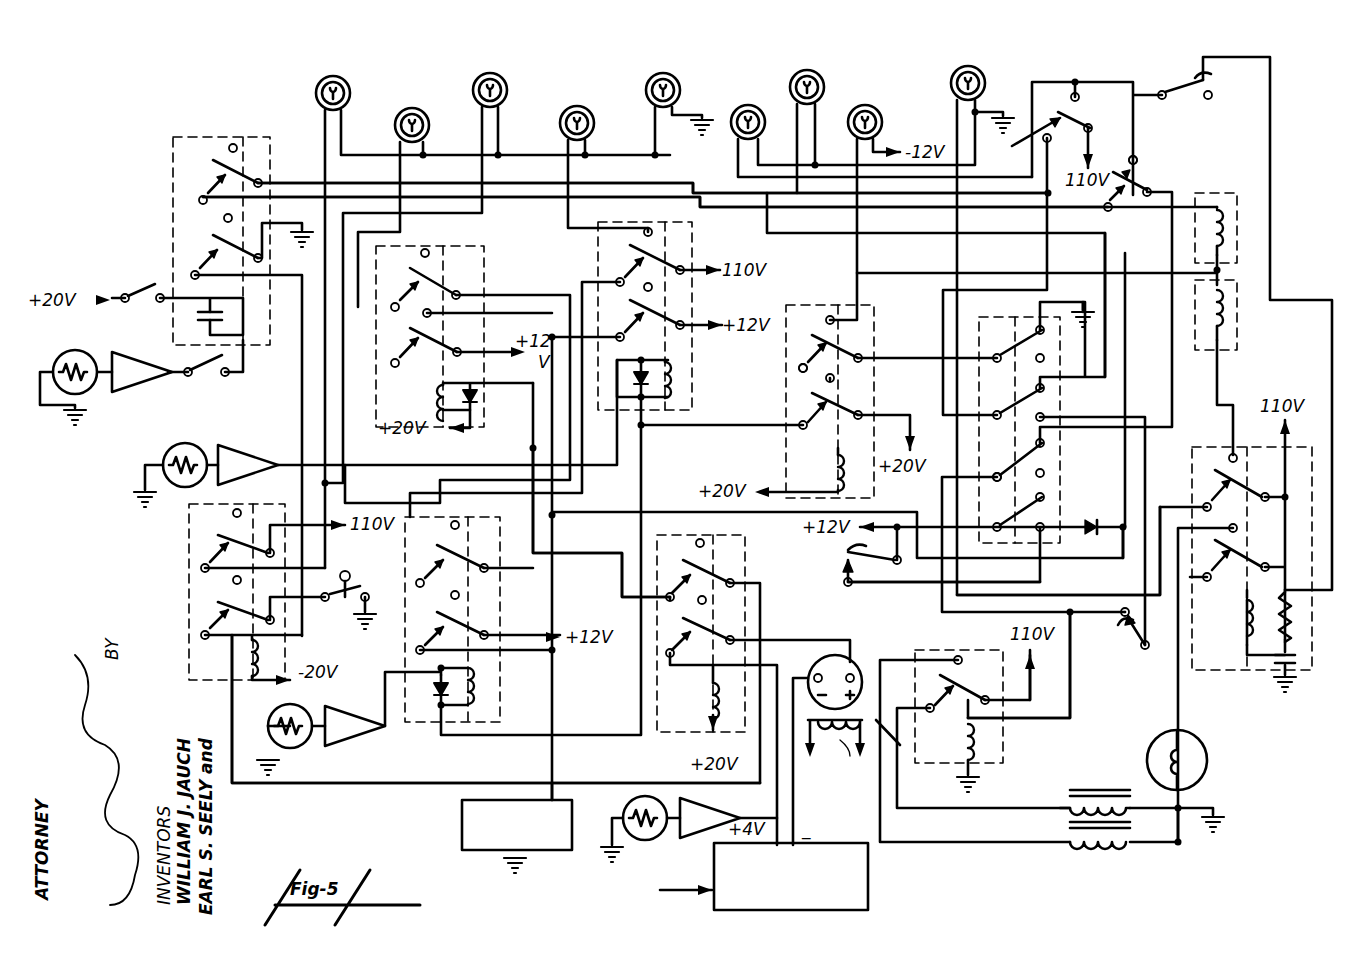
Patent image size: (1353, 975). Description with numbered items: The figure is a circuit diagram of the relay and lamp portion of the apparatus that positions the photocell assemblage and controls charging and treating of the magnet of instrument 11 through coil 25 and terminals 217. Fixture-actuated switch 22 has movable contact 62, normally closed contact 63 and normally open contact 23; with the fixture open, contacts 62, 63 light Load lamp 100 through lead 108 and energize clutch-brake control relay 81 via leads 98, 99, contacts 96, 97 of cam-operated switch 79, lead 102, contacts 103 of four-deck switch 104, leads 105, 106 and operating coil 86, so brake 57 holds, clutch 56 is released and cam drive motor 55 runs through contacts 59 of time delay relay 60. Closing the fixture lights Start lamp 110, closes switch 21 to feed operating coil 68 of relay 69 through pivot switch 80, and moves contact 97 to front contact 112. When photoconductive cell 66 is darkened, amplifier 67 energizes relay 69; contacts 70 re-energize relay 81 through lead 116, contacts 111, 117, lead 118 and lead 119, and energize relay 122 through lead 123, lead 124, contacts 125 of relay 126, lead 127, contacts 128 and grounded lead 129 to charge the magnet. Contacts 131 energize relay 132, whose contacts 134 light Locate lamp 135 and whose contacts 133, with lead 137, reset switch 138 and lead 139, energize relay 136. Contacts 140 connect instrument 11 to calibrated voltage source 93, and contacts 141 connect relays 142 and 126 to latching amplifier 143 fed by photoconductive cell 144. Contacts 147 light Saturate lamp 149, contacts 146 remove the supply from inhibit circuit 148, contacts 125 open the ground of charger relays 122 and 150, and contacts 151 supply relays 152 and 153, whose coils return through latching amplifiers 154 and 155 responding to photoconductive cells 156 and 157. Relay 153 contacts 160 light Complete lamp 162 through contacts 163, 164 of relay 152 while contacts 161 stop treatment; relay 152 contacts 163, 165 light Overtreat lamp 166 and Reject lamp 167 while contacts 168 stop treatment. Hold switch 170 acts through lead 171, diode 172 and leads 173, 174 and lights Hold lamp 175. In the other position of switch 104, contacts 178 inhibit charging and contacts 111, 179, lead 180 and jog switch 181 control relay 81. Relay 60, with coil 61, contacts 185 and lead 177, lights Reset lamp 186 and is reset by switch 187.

The lamp 135 is at (316, 93).
The saturate lamp 149 is at (395, 122).
The lamp 162 is at (473, 88).
The lamp 166 is at (560, 126).
The lamp 167 is at (650, 100).
The Load lamp 100 is at (731, 120).
The Start lamp 110 is at (790, 85).
The lamp 175 is at (882, 122).
The RESET lamp 186 is at (951, 80).
The relay 69 is at (205, 137).
The contacts of relay 69 70 is at (200, 172).
The contacts of relay 69 131 is at (200, 228).
The fixture-actuated switch 21 is at (160, 285).
The operating coil 68 is at (248, 328).
The cam-actuated pivot switch 80 is at (210, 372).
The photoconductive cell 66 is at (85, 352).
The amplifier 67 is at (155, 358).
The photoconductive cell 156 is at (178, 445).
The latching amplifier 154 is at (255, 452).
The relay 142 is at (488, 262).
The contacts of relay 142 147 is at (438, 262).
The contacts of relay 142 146 is at (412, 357).
The relay 152 is at (745, 365).
The contacts of relay 152 164 is at (655, 236).
The contacts of relay 152 163 is at (665, 258).
The contacts of relay 152 165 is at (615, 272).
The contacts of relay 152 168 is at (665, 312).
The relay 126 is at (780, 300).
The lead 127 is at (912, 358).
The contacts of relay 126 125 is at (800, 355).
The contacts of relay 126 151 is at (805, 396).
The lead 102 is at (1165, 345).
The contacts of four-deck switch 104 128 is at (1035, 320).
The lead 129 is at (1088, 310).
The contact of four-deck switch 104 117 is at (1048, 385).
The contact of four-deck switch 104 111 is at (1030, 403).
The contact of four-deck switch 104 179 is at (1048, 400).
The lead 180 is at (1108, 415).
The contacts of four-deck switch 104 103 is at (1048, 444).
The four-deck switch 104 is at (1118, 473).
The lead 105 is at (942, 492).
The contacts of four-deck switch 104 178 is at (1050, 505).
The lead 124 is at (1143, 268).
The lead 116 is at (1050, 222).
The diode 172 is at (1088, 540).
The lead 173 is at (1125, 562).
The hold switch 170 is at (845, 560).
The lead 171 is at (920, 582).
The relay 122 is at (1217, 190).
The relay 150 is at (1298, 340).
The lead 98 is at (1093, 82).
The lead 108 is at (1030, 78).
The fixture-actuated switch 22 is at (1047, 101).
The contact of fixture switch 22 63 is at (1075, 112).
The contact of fixture switch 22 23 is at (1030, 136).
The movable contact of fixture switch 22 62 is at (1082, 130).
The lead 99 is at (1104, 143).
The back contact of cam-operated switch 79 96 is at (1109, 152).
The switch 187 is at (1185, 82).
The cam-operated switch 79 is at (1140, 160).
The movable contact of cam-operated switch 79 97 is at (1147, 188).
The front contact of cam-operated switch 79 112 is at (1115, 198).
The lead 123 is at (1160, 215).
The lead 118 is at (310, 180).
The lead 119 is at (388, 198).
The time delay relay 60 is at (1262, 680).
The contacts of time delay relay 60 185 is at (1212, 478).
The conductor 177 is at (1170, 505).
The contacts of time delay relay 60 59 is at (1228, 550).
The relay coil 61 is at (1240, 638).
The relay 132 is at (188, 532).
The contacts of relay 132 134 is at (212, 543).
The contacts of relay 132 133 is at (215, 602).
The reset switch 138 is at (368, 560).
The lead 137 is at (320, 600).
The photoconductive cell 157 is at (278, 710).
The latching amplifier 155 is at (368, 700).
The lead 139 is at (345, 790).
The relay 153 is at (420, 722).
The contacts of relay 153 160 is at (445, 522).
The contacts of relay 153 161 is at (460, 612).
The lead 174 is at (553, 596).
The relay 136 is at (660, 735).
The contacts of relay 136 141 is at (680, 560).
The contacts of relay 136 140 is at (680, 635).
The instrument 11 is at (858, 655).
The coil 25 is at (905, 760).
The terminals 217 is at (805, 778).
The clutch-brake control relay 81 is at (1055, 744).
The operating coil 86 is at (960, 720).
The lead 106 is at (1072, 695).
The jog switch 181 is at (1112, 638).
The cam drive motor 55 is at (1152, 748).
The brake 57 is at (1080, 795).
The clutch 56 is at (1065, 835).
The inhibit circuit 148 is at (540, 858).
The photoconductive cell 144 is at (624, 802).
The latching amplifier 143 is at (690, 838).
The calibrated voltage source 93 is at (712, 890).